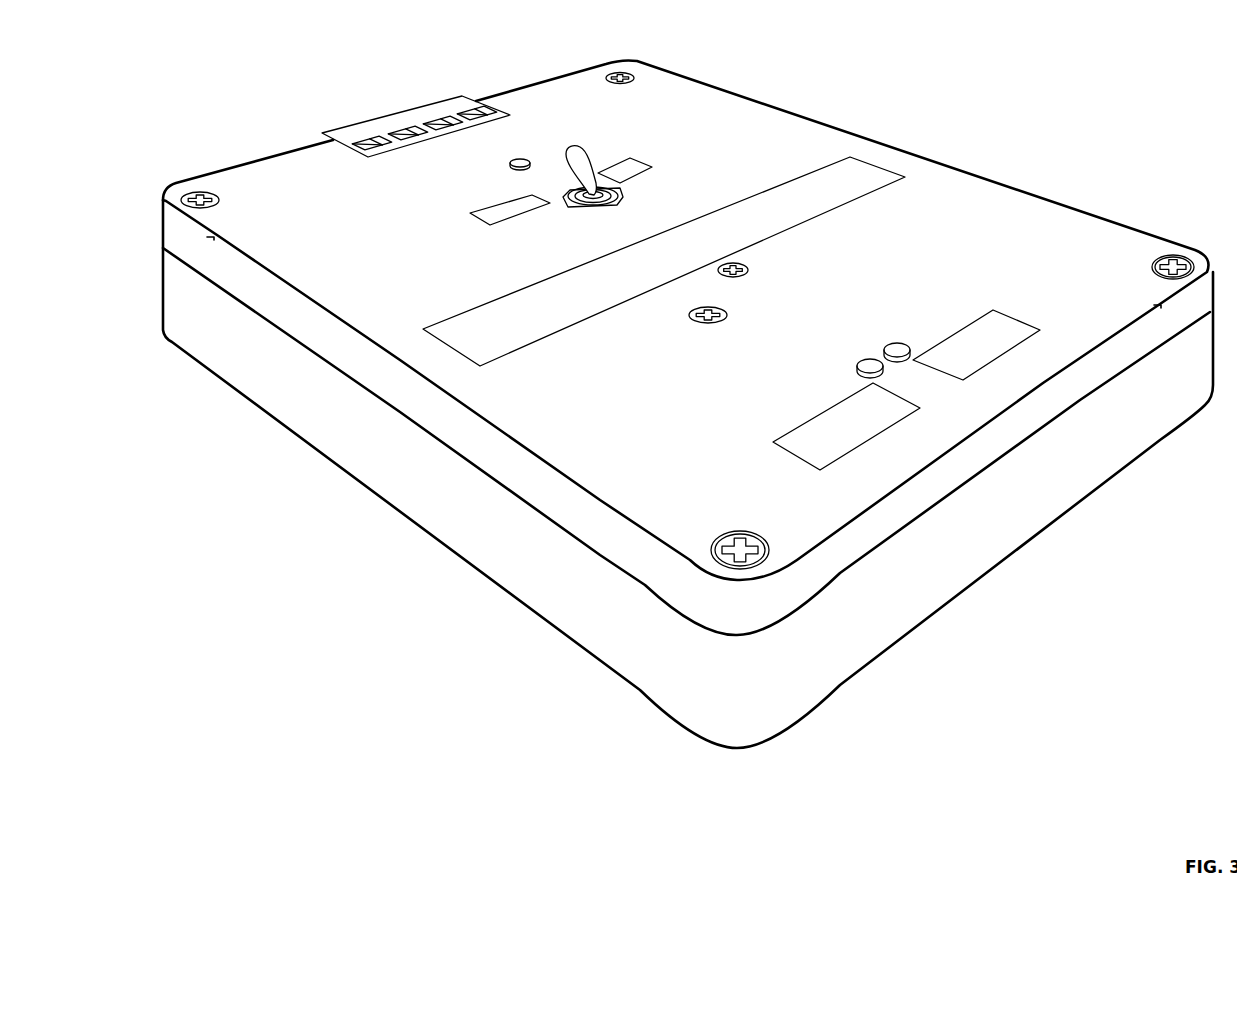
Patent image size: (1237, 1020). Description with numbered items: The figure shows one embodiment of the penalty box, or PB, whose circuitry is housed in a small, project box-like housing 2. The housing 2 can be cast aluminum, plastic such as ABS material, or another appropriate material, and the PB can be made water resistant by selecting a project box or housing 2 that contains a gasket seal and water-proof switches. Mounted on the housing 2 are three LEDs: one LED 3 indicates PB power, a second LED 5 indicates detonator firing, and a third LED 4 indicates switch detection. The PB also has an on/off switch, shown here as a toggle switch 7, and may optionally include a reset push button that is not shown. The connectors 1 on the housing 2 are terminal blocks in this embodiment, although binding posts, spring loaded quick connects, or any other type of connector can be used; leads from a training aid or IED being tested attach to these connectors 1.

The connectors 1 is at (388, 117).
The housing 2 is at (938, 162).
The LED 3 is at (528, 158).
The LED 4 is at (895, 343).
The LED 5 is at (857, 367).
The toggle switch 7 is at (589, 150).